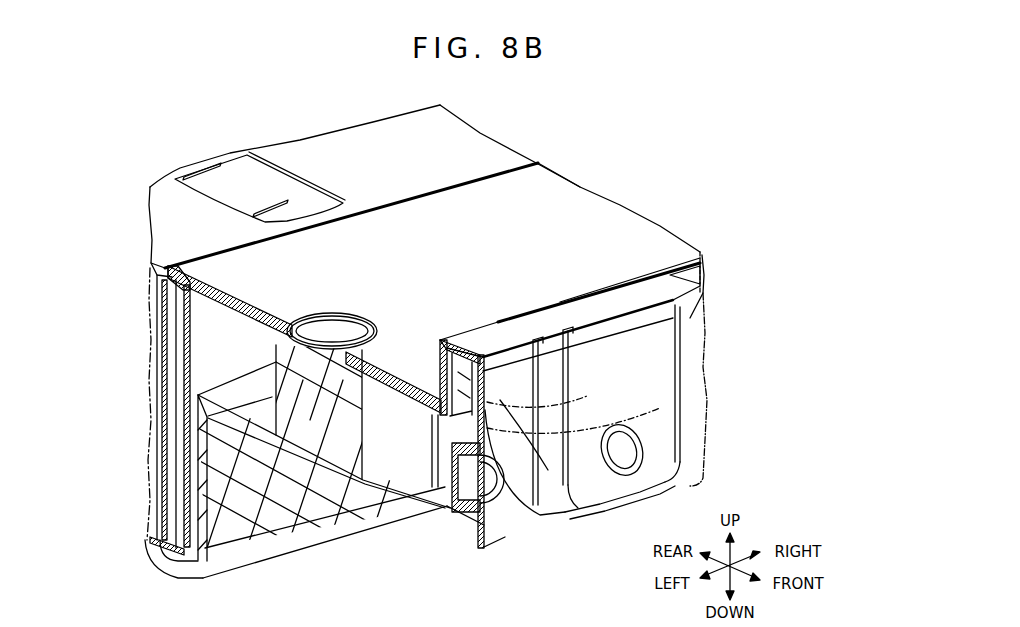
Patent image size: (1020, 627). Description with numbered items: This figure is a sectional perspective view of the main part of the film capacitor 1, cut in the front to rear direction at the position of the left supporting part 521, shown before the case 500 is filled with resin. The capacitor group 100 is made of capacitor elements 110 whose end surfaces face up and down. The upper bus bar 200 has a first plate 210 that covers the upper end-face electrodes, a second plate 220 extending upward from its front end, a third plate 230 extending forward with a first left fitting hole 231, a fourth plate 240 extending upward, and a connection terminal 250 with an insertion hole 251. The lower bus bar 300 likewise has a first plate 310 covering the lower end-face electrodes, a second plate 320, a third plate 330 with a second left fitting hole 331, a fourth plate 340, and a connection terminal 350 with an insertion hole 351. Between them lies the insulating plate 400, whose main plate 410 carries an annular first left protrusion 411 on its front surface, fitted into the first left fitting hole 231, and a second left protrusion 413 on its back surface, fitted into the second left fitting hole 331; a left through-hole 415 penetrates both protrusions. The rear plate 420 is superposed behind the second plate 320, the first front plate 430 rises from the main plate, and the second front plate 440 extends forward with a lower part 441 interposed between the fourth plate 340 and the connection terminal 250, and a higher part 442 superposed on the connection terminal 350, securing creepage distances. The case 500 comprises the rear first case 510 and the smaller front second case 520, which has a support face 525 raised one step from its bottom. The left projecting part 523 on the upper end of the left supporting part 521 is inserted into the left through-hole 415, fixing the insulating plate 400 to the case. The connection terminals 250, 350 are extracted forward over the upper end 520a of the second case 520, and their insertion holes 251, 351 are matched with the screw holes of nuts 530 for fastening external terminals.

The film capacitor 1 is at (660, 201).
The capacitor group 100 is at (240, 170).
The capacitor element 110 is at (150, 447).
The upper bus bar 200 is at (505, 183).
The first plate 210 is at (317, 160).
The second plate 220 is at (152, 268).
The third plate 230 is at (553, 203).
The first left fitting hole 231 is at (360, 313).
The fourth plate 240 is at (425, 362).
The connection terminal 250 is at (520, 497).
The insertion hole 251 is at (500, 522).
The lower bus bar 300 is at (227, 318).
The first plate 310 is at (175, 535).
The second plate 320 is at (220, 357).
The third plate 330 is at (418, 462).
The second left fitting hole 331 is at (308, 423).
The fourth plate 340 is at (612, 421).
The connection terminal 350 is at (667, 378).
The insertion hole 351 is at (690, 422).
The insulating plate 400 is at (592, 290).
The main plate 410 is at (365, 498).
The first left protrusion 411 is at (340, 300).
The second left protrusion 413 is at (335, 483).
The left through-hole 415 is at (325, 310).
The rear plate 420 is at (183, 313).
The first front plate 430 is at (441, 337).
The second front plate 440 is at (645, 293).
The lower part 441 is at (557, 407).
The higher part 442 is at (558, 300).
The case 500 is at (332, 487).
The first case 510 is at (227, 522).
The second case 520 is at (688, 443).
The upper end 520a is at (703, 293).
The left supporting part 521 is at (277, 393).
The left projecting part 523 is at (283, 305).
The support face 525 is at (560, 500).
The nut 530 is at (443, 520).